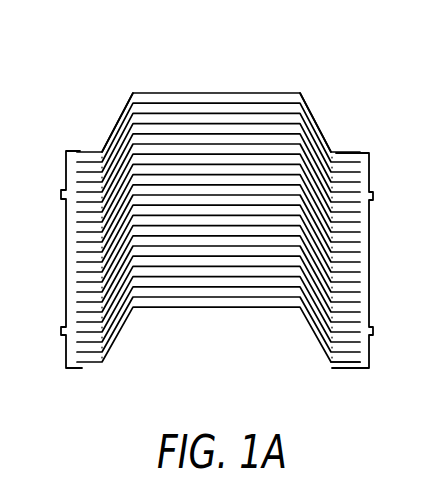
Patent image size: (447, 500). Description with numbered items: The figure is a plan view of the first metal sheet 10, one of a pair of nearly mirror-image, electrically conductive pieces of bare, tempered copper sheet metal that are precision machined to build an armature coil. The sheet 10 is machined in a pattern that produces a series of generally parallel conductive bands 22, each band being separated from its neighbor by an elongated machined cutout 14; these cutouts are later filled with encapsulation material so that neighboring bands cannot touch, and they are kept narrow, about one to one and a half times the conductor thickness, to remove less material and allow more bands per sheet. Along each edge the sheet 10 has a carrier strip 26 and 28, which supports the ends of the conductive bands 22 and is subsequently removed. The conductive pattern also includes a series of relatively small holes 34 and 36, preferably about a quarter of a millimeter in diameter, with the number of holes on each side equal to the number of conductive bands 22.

The first metal sheet 10 is at (268, 43).
The elongated machined cutout 14 is at (352, 368).
The conductive band 22 is at (145, 309).
The carrier strip 26 is at (70, 368).
The carrier strip 28 is at (365, 370).
The small hole 34 is at (101, 153).
The small hole 36 is at (332, 153).